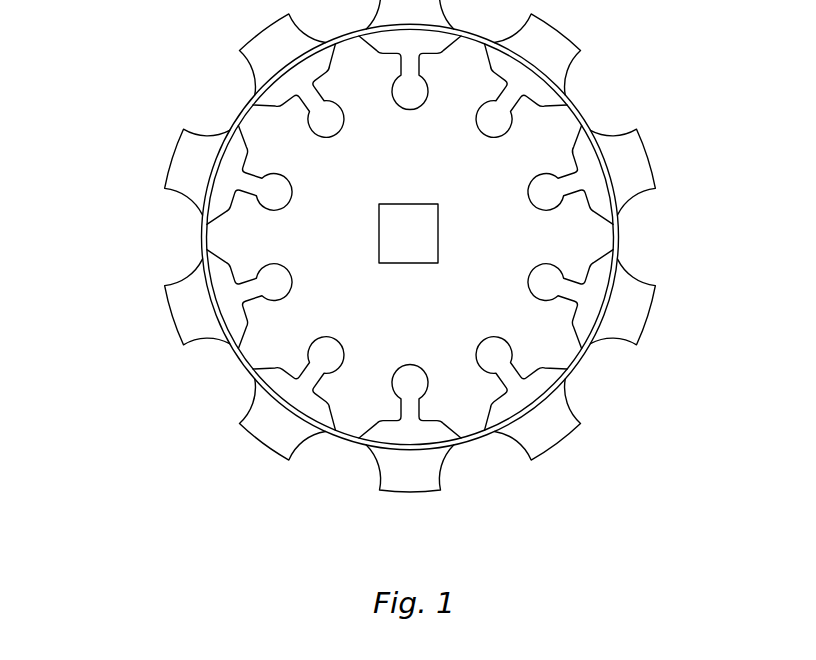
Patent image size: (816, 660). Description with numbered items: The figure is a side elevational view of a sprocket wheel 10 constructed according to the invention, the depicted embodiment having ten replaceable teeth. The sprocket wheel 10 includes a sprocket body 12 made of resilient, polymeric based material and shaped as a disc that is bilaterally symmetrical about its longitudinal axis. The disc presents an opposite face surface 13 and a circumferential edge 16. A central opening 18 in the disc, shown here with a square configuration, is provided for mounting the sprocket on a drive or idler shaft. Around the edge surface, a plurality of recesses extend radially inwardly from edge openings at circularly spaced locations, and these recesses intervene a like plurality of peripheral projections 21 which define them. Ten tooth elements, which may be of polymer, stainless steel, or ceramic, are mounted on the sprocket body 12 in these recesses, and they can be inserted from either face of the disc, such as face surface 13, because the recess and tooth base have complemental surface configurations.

The sprocket wheel 10 is at (389, 246).
The sprocket body 12 is at (610, 235).
The face surface 13 is at (341, 240).
The circumferential edge 16 is at (575, 362).
The central opening 18 is at (422, 236).
The peripheral projection 21 is at (538, 138).